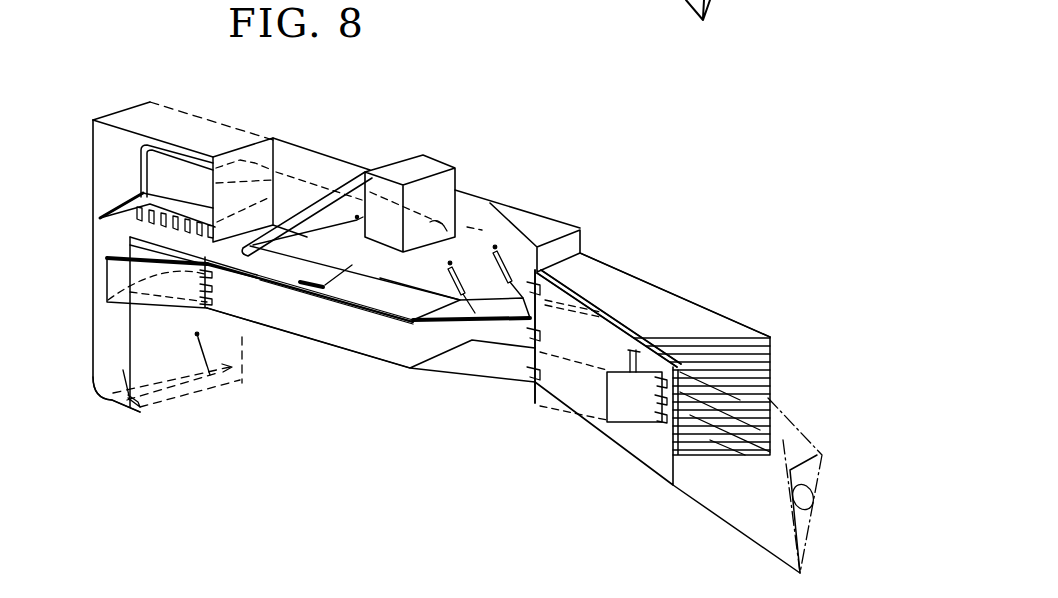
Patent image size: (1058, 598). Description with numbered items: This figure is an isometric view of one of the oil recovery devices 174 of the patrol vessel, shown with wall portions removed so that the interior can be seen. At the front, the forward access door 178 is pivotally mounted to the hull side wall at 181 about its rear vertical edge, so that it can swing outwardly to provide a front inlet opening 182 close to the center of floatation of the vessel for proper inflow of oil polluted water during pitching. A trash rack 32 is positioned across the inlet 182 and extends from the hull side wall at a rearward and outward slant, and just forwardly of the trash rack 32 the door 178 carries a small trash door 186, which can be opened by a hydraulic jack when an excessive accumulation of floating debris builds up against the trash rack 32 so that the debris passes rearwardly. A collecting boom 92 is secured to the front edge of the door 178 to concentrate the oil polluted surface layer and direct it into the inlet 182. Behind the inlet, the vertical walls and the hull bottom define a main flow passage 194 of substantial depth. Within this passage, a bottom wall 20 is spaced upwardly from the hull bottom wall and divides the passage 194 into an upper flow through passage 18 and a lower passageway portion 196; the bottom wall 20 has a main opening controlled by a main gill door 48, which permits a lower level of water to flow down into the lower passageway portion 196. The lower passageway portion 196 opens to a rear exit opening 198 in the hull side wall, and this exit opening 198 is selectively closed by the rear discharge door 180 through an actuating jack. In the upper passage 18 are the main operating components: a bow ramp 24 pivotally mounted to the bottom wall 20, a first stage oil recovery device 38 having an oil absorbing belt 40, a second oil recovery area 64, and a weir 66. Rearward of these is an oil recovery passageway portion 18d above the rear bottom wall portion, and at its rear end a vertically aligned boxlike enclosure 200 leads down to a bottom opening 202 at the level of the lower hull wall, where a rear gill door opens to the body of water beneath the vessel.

The oil recovery device 174 is at (441, 135).
The oil absorbing belt 40 is at (320, 195).
The first stage oil recovery device 38 is at (372, 153).
The upper flow through passage 18 is at (440, 257).
The weir 66 is at (163, 192).
The second oil recovery area 64 is at (183, 207).
The oil recovery passageway portion 18d is at (157, 236).
The boxlike enclosure 200 is at (108, 353).
The bottom opening 202 is at (140, 413).
The rear exit opening 198 is at (132, 251).
The rear discharge door 180 is at (120, 290).
The main gill door 48 is at (273, 288).
The lower passageway portion 196 is at (317, 330).
The bottom wall 20 is at (368, 310).
The bow ramp 24 is at (493, 320).
The pivot mounting of forward door 181 is at (534, 382).
The trash door 186 is at (607, 410).
The forward access door 178 is at (647, 458).
The main flow passage 194 is at (633, 312).
The front inlet opening 182 is at (678, 322).
The trash rack 32 is at (772, 356).
The collecting boom 92 is at (822, 455).